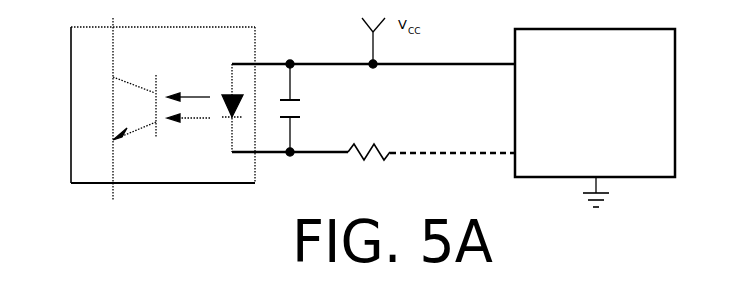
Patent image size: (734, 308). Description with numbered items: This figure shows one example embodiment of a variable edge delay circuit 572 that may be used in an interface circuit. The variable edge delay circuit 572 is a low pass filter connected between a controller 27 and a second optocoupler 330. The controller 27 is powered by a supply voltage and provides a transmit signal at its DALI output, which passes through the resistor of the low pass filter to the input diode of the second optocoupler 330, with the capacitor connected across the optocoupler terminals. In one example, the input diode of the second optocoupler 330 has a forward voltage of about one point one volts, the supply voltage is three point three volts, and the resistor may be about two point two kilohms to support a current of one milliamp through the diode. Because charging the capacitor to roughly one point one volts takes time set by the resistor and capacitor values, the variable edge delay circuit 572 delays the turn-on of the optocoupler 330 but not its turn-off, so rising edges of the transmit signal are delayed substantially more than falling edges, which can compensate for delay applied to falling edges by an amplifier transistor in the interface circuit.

The second optocoupler 330 is at (138, 109).
The variable edge delay circuit 572 is at (397, 126).
The controller 27 is at (612, 118).